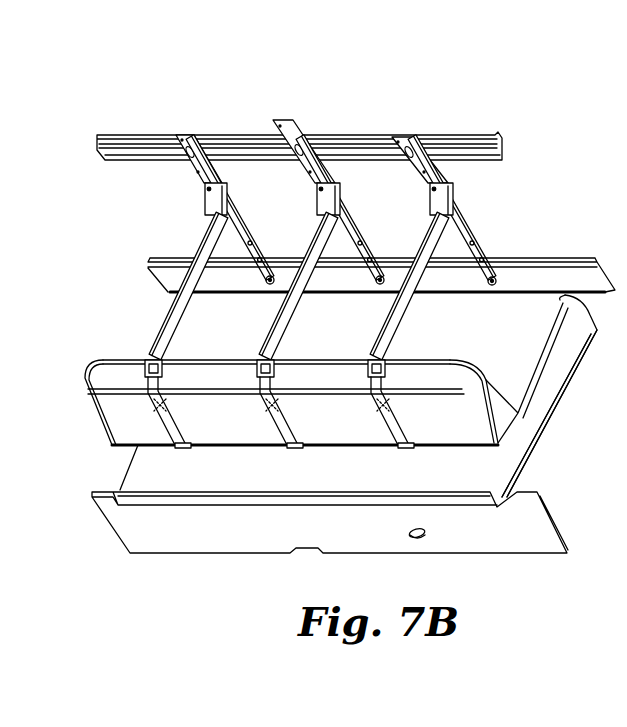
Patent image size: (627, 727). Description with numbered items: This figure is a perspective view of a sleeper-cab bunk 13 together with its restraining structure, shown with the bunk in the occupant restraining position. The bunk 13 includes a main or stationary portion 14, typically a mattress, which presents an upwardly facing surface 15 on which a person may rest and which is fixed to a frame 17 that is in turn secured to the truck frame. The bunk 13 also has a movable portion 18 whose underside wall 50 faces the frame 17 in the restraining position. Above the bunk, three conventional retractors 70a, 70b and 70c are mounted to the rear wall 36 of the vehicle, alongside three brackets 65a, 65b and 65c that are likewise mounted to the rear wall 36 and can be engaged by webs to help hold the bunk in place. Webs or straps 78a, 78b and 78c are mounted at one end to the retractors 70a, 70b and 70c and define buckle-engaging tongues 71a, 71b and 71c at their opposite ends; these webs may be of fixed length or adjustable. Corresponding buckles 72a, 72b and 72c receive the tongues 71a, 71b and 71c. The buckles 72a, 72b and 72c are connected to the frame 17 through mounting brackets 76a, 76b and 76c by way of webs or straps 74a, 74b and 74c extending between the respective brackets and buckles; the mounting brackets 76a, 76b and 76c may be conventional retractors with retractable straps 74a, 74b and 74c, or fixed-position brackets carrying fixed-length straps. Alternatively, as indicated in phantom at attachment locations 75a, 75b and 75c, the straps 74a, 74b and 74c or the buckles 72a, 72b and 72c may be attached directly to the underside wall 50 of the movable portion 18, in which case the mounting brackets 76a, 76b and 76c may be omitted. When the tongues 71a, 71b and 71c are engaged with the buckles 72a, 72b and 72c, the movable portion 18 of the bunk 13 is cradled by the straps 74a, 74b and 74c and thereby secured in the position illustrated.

The rear wall 36 is at (296, 133).
The retractor 70a is at (205, 192).
The retractor 70b is at (317, 194).
The retractor 70c is at (430, 196).
The bracket 65a is at (273, 276).
The bracket 65b is at (378, 276).
The bracket 65c is at (490, 277).
The web 78a is at (170, 321).
The web 78b is at (296, 302).
The web 78c is at (404, 303).
The buckle-engaging tongue 71a is at (152, 359).
The buckle-engaging tongue 71b is at (259, 364).
The buckle-engaging tongue 71c is at (370, 365).
The buckle 72a is at (146, 368).
The buckle 72b is at (258, 372).
The buckle 72c is at (388, 368).
The strap 74a is at (175, 408).
The strap 74b is at (285, 408).
The strap 74c is at (402, 438).
The attachment location 75a is at (154, 403).
The attachment location 75b is at (266, 407).
The attachment location 75c is at (377, 407).
The mounting bracket 76a is at (184, 448).
The mounting bracket 76b is at (294, 448).
The mounting bracket 76c is at (405, 448).
The upwardly facing surface 15 is at (527, 328).
The stationary portion 14 is at (566, 350).
The bunk 13 is at (556, 378).
The movable portion 18 is at (497, 408).
The frame 17 is at (538, 450).
The underside wall 50 is at (122, 432).